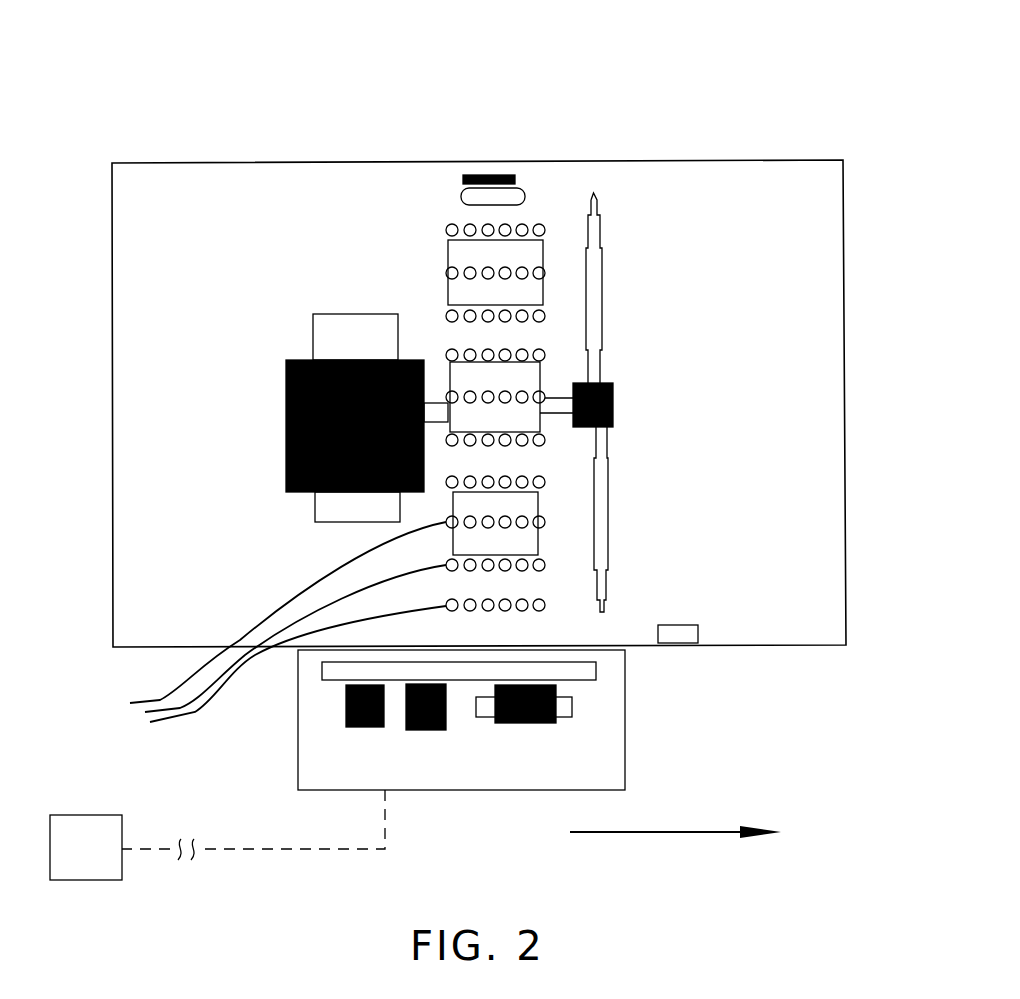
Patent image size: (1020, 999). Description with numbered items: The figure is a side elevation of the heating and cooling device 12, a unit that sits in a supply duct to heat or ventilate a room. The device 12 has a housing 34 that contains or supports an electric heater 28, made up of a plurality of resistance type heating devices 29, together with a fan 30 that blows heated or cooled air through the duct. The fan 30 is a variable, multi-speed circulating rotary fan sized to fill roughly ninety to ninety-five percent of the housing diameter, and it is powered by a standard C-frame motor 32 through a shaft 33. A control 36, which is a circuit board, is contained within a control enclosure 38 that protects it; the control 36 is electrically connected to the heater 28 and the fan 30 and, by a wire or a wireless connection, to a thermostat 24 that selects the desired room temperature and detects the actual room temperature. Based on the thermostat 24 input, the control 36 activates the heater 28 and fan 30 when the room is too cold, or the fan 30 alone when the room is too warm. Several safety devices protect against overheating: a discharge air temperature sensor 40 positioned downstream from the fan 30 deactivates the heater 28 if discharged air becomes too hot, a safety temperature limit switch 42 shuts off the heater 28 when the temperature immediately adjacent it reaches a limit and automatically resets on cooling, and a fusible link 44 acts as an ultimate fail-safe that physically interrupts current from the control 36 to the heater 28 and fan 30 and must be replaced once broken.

The heating and cooling device 12 is at (297, 96).
The thermostat 24 is at (75, 815).
The heater 28 is at (541, 228).
The resistance type heating devices 29 is at (274, 633).
The fan 30 is at (602, 224).
The C-frame motor 32 is at (286, 424).
The shaft 33 is at (571, 383).
The housing 34 is at (793, 161).
The control 36 is at (333, 686).
The control enclosure 38 is at (463, 727).
The discharge air temperature sensor 40 is at (700, 632).
The safety temperature limit switch 42 is at (461, 197).
The fusible link 44 is at (492, 177).